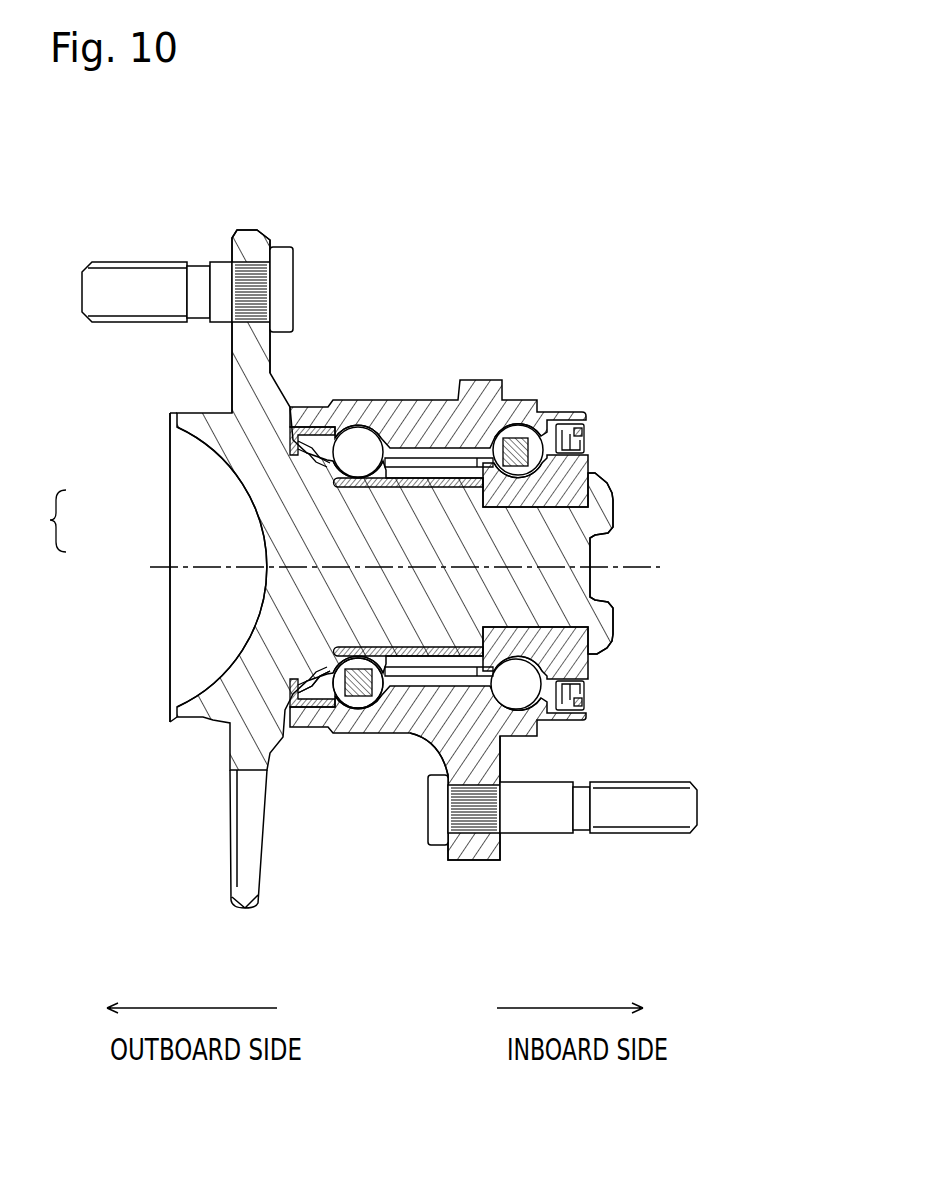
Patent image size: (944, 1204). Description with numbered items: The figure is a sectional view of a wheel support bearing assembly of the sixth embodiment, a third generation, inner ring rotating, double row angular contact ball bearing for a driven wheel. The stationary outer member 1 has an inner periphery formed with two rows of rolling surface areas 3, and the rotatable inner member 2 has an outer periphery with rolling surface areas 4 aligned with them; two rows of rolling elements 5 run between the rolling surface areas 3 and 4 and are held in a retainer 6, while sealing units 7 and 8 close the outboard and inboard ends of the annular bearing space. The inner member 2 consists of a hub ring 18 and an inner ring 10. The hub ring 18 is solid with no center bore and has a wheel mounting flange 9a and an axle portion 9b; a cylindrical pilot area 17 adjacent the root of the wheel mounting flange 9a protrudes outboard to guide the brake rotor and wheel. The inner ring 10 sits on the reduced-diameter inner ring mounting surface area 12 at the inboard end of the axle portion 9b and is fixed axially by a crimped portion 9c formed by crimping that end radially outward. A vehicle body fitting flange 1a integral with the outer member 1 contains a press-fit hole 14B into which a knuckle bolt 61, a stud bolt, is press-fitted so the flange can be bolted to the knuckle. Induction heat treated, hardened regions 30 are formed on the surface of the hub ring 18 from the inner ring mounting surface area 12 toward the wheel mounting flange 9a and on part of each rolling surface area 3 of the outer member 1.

The outer member 1 is at (457, 364).
The vehicle body fitting flange 1a is at (476, 860).
The inner member 2 is at (346, 528).
The rolling surface area 3 is at (358, 427).
The rolling surface area 4 is at (322, 478).
The rolling element 5 is at (343, 455).
The retainer 6 is at (483, 466).
The sealing unit 7 is at (297, 427).
The sealing unit 8 is at (575, 443).
The wheel mounting flange 9a is at (255, 232).
The axle portion 9b is at (405, 603).
The crimped portion 9c is at (606, 497).
The inner ring 10 is at (470, 511).
The inner ring mounting surface area 12 is at (614, 514).
The press-fit hole 14B is at (500, 813).
The pilot area 17 is at (165, 417).
The hub ring 18 is at (285, 495).
The hardened region 30 is at (343, 629).
The knuckle bolt 61 is at (644, 815).